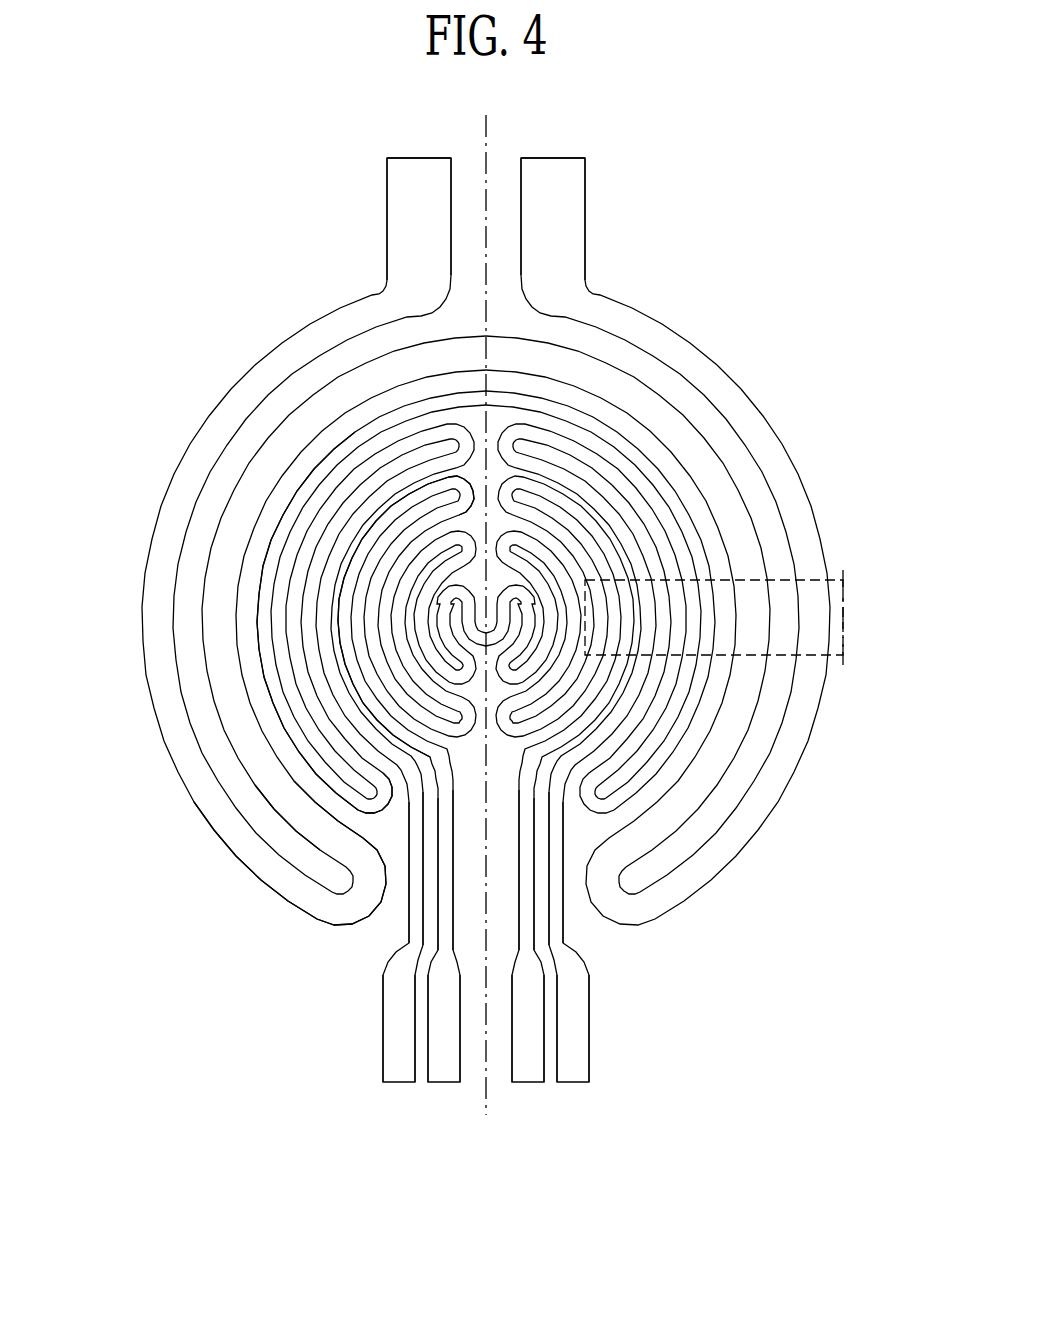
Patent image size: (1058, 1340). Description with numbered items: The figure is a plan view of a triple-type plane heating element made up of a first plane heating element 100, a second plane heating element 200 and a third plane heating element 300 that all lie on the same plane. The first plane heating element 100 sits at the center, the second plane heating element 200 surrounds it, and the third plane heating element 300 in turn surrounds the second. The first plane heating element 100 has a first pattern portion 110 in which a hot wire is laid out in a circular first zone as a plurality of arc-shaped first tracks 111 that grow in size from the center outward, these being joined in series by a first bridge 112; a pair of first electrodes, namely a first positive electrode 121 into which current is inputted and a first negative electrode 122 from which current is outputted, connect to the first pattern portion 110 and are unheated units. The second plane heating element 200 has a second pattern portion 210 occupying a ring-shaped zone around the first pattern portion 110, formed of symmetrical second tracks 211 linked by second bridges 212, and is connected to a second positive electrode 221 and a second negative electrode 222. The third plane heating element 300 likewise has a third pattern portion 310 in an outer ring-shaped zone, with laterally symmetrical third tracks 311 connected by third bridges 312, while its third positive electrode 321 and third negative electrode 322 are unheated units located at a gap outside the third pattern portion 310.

The first plane heating element 100 is at (580, 494).
The first pattern portion 110 is at (110, 350).
The first tracks 111 is at (393, 510).
The first bridge 112 is at (463, 480).
The first positive electrode 121 is at (445, 1083).
The first negative electrode 122 is at (527, 1083).
The second plane heating element 200 is at (697, 514).
The second pattern portion 210 is at (82, 748).
The second tracks 211 is at (295, 740).
The second bridges 212 is at (372, 808).
The second positive electrode 221 is at (397, 1083).
The second negative electrode 222 is at (575, 1083).
The third plane heating element 300 is at (826, 537).
The third pattern portion 310 is at (320, 1020).
The third tracks 311 is at (263, 868).
The third bridges 312 is at (342, 908).
The third positive electrode 321 is at (420, 170).
The third negative electrode 322 is at (554, 170).